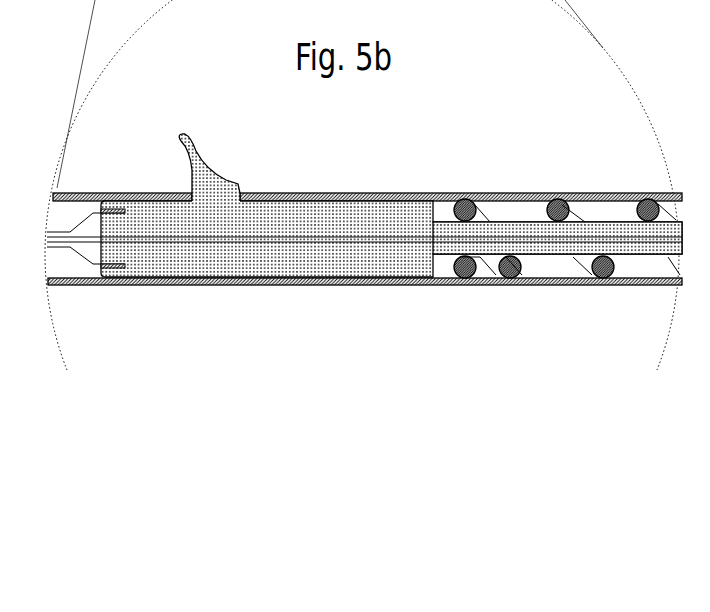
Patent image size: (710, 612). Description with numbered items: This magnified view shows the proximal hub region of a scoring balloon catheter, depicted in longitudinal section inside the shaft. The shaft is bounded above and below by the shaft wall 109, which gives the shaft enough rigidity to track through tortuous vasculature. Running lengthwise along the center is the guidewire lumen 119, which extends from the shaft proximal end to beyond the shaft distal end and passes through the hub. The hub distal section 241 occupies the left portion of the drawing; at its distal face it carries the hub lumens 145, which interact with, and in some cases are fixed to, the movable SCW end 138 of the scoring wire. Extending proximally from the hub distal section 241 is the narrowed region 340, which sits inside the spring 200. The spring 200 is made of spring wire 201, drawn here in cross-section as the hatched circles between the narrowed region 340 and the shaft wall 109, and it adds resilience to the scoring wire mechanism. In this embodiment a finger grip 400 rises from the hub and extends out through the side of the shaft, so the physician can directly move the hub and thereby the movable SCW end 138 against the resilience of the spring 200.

The shaft wall 109 is at (62, 191).
The movable SCW end 138 is at (126, 206).
The hub lumens 145 is at (108, 271).
The finger grip 400 is at (217, 157).
The hub distal section 241 is at (380, 255).
The narrowed region 340 is at (510, 221).
The guidewire lumen 119 is at (630, 240).
The spring wire 201 is at (603, 280).
The spring 200 is at (667, 263).